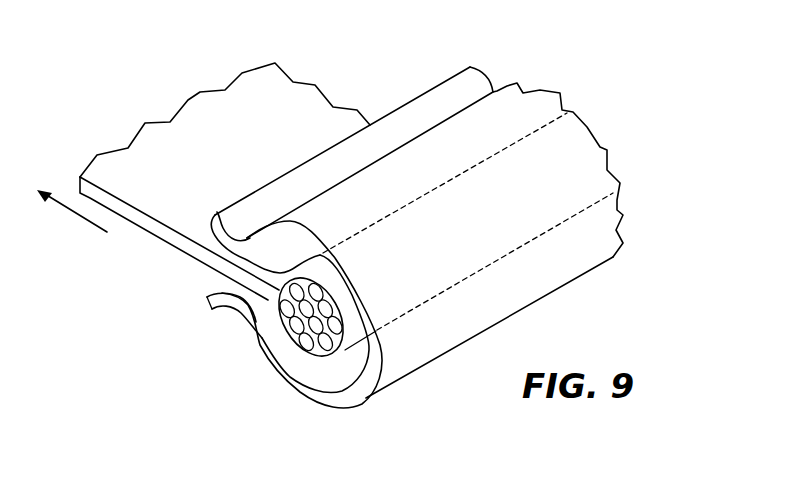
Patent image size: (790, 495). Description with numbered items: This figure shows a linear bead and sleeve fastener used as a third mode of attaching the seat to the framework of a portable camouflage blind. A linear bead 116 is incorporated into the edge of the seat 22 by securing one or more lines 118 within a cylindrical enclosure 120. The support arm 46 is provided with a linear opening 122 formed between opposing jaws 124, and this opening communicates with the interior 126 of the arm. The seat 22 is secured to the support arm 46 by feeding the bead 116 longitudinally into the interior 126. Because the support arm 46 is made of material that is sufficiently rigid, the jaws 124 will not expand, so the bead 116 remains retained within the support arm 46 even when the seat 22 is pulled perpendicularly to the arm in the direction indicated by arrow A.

The seat 22 is at (247, 98).
The support arm 46 is at (545, 278).
The linear bead 116 is at (335, 367).
The lines 118 is at (290, 330).
The cylindrical enclosure 120 is at (357, 334).
The linear opening 122 is at (201, 229).
The jaws 124 is at (215, 213).
The interior 126 is at (325, 370).